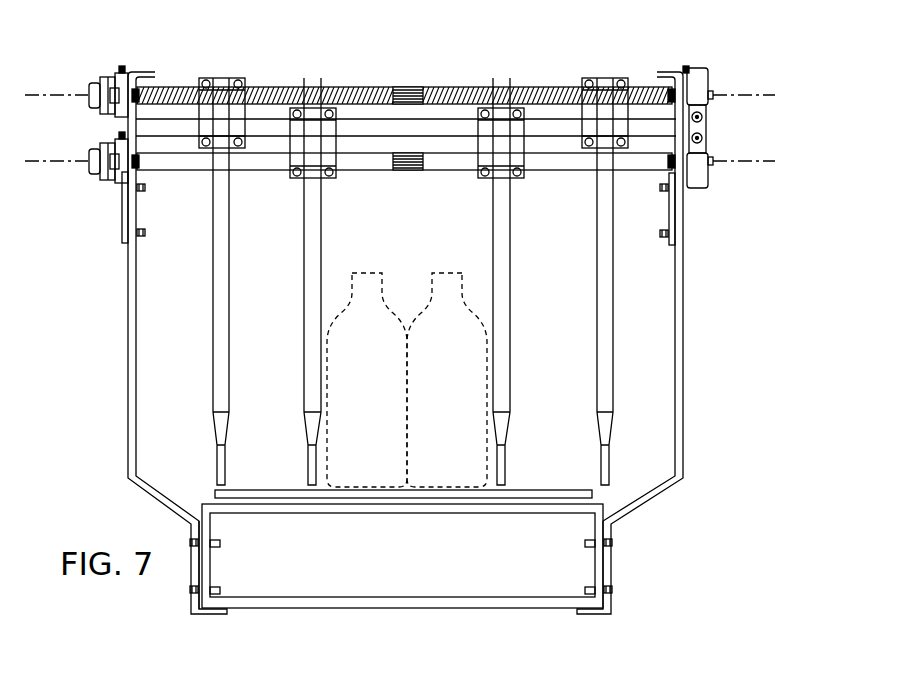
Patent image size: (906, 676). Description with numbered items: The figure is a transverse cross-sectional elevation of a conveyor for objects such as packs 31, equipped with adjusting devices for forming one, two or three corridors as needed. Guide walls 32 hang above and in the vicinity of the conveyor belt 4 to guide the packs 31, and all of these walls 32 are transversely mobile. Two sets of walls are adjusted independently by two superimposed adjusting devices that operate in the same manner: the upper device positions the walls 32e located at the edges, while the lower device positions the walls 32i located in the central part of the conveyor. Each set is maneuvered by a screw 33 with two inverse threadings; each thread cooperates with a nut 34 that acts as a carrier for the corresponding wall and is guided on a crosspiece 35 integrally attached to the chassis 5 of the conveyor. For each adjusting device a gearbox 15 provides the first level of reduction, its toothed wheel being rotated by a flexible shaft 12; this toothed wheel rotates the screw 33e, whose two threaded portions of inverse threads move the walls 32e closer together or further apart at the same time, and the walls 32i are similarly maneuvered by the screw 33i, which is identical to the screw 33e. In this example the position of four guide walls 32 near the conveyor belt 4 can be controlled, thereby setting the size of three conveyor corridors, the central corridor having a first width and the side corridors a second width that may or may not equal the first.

The conveyor belt 4 is at (538, 488).
The chassis 5 is at (205, 573).
The flexible shaft 12 is at (703, 137).
The gearbox 15 is at (708, 72).
The pack 31 is at (353, 382).
The guide wall 32 is at (401, 281).
The edge guide wall 32e is at (220, 328).
The central guide wall 32i is at (310, 400).
The screw 33 is at (403, 127).
The edge-wall screw 33e is at (400, 88).
The central-wall screw 33i is at (407, 171).
The nut 34 is at (222, 86).
The crosspiece 35 is at (455, 128).